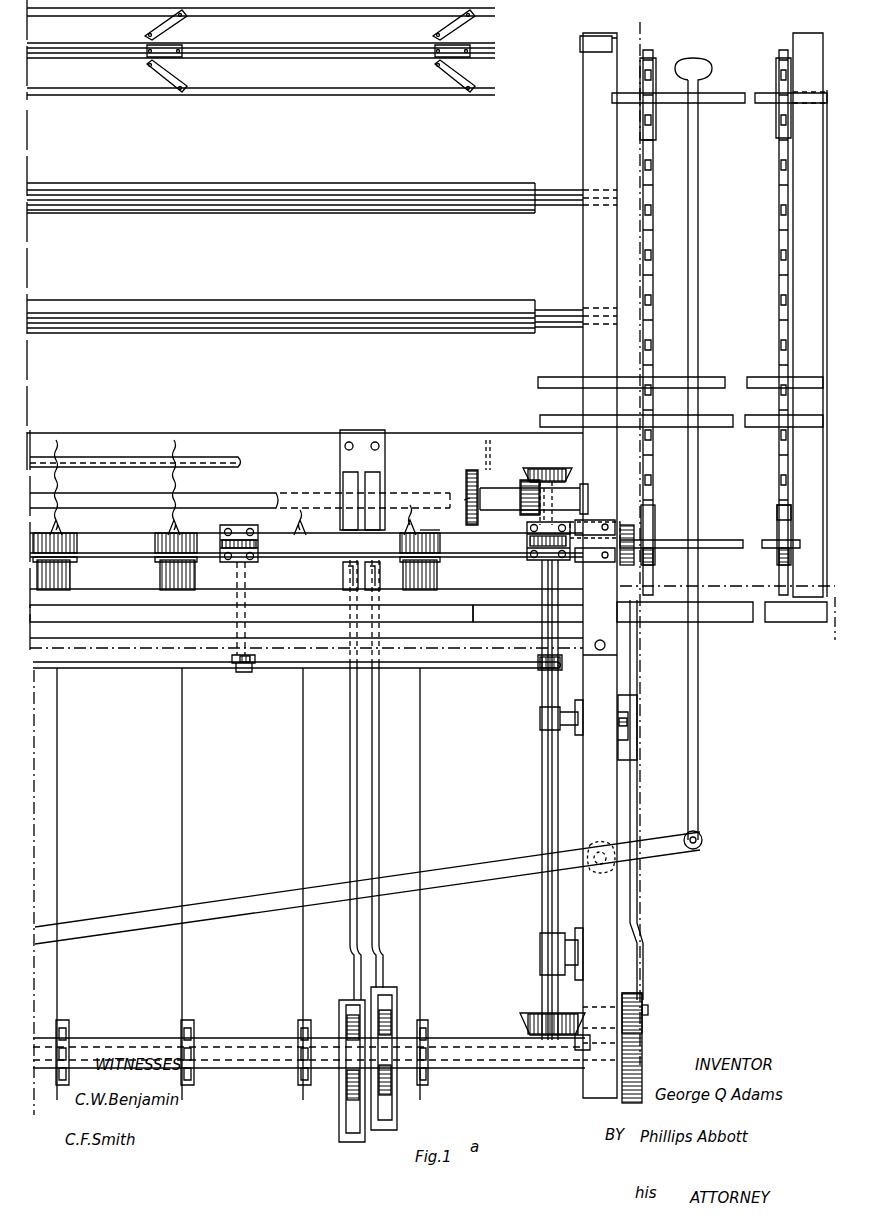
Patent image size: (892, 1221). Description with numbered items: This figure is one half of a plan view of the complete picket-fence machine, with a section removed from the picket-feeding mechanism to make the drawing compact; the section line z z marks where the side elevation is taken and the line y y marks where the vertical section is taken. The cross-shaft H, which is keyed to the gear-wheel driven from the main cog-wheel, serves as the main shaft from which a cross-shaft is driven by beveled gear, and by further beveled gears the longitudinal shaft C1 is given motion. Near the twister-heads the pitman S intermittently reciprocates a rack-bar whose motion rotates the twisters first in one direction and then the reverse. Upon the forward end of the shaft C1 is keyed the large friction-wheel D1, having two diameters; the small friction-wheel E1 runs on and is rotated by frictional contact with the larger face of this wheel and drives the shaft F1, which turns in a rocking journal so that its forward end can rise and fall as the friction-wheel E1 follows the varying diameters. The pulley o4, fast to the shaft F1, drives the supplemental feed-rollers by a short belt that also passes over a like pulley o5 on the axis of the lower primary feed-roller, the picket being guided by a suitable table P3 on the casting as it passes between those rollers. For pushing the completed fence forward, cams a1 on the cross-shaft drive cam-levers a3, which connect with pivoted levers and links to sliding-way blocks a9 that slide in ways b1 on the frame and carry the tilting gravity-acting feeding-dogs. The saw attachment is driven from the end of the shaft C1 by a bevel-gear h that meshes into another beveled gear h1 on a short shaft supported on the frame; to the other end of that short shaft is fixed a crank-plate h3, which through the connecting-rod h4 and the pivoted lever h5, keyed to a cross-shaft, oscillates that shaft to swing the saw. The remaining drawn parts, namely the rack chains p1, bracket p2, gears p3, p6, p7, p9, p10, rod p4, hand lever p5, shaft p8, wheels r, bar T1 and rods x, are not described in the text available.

The cross-shaft H is at (600, 565).
The section line z z is at (644, 545).
The section line y y is at (826, 630).
The vertical rack chain p1 is at (654, 492).
The bracket on rod p2 is at (640, 722).
The sliding gear p3 is at (630, 524).
The connecting rod p4 is at (638, 648).
The hand lever p5 is at (688, 812).
The small gear p6 is at (648, 1003).
The large gear p7 is at (645, 1040).
The horizontal shaft p8 is at (654, 528).
The gear on shaft p9 is at (769, 517).
The pinion p10 is at (656, 566).
The gear wheels r is at (246, 561).
The pitman S is at (251, 614).
The bar T' T1 is at (511, 613).
The shaft F' F1 is at (545, 652).
The ways b1 is at (342, 500).
The sliding-way blocks a9 is at (345, 520).
The large friction-wheel D1 is at (434, 519).
The table P3 is at (306, 544).
The bevel-gear h is at (548, 466).
The beveled gear h1 is at (534, 493).
The crank-plate h3 is at (464, 498).
The connecting-rod h4 is at (491, 453).
The pivoted lever h5 is at (461, 498).
The pulley o5 is at (249, 674).
The pulley o4 is at (540, 668).
The longitudinal shaft C1 is at (542, 908).
The vertical rods x is at (57, 715).
The cam-levers a3 is at (370, 780).
The cams a1 is at (375, 1064).
The small friction-wheel E1 is at (367, 888).